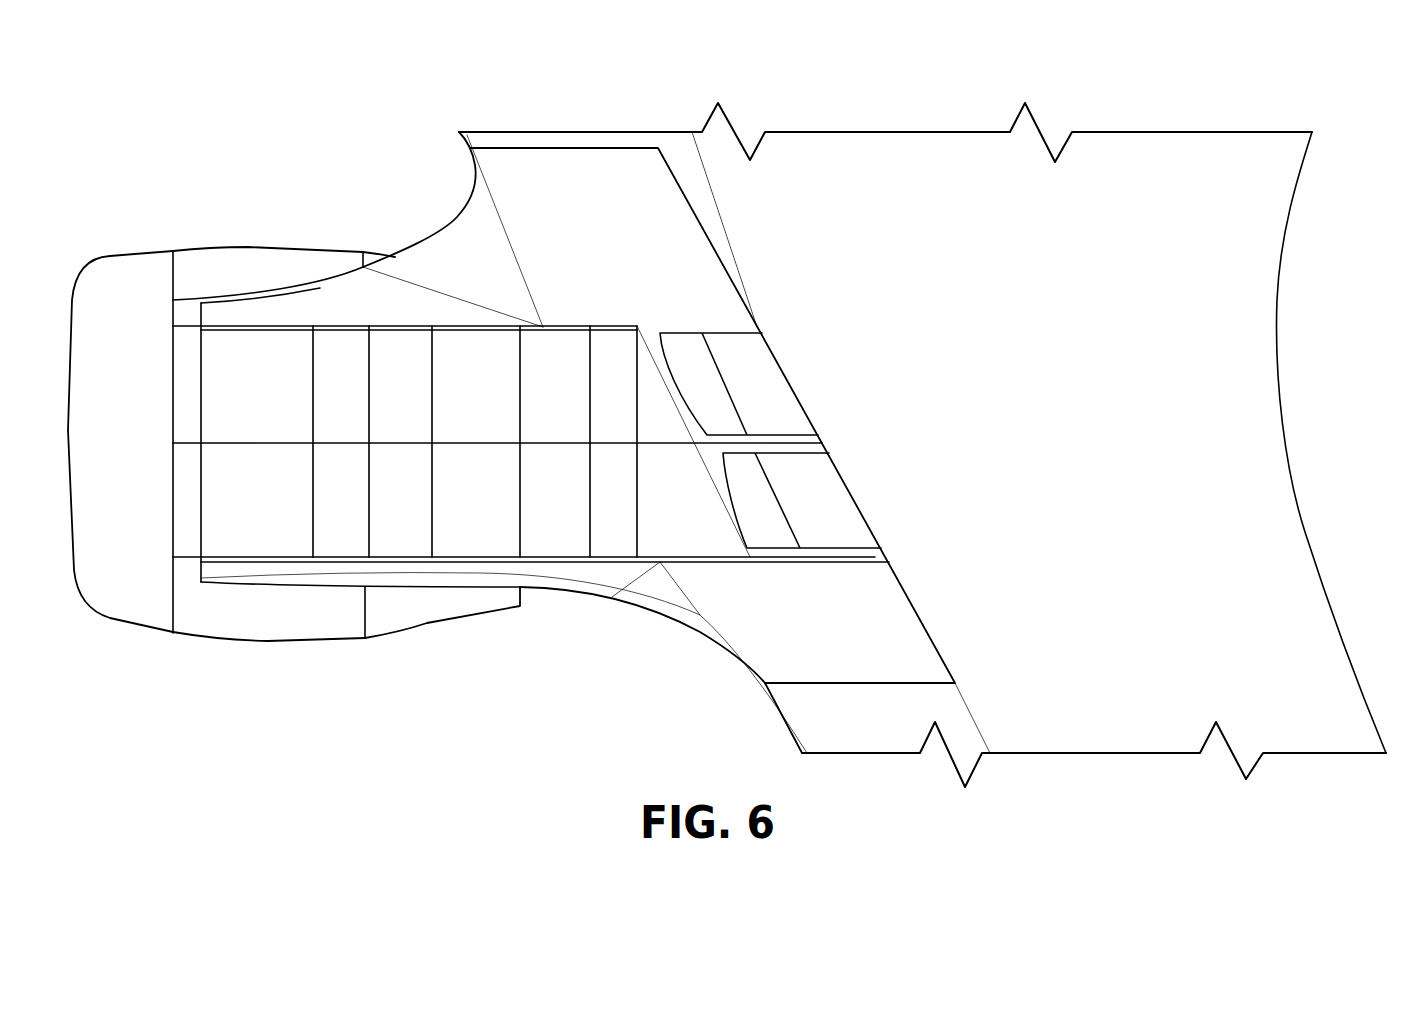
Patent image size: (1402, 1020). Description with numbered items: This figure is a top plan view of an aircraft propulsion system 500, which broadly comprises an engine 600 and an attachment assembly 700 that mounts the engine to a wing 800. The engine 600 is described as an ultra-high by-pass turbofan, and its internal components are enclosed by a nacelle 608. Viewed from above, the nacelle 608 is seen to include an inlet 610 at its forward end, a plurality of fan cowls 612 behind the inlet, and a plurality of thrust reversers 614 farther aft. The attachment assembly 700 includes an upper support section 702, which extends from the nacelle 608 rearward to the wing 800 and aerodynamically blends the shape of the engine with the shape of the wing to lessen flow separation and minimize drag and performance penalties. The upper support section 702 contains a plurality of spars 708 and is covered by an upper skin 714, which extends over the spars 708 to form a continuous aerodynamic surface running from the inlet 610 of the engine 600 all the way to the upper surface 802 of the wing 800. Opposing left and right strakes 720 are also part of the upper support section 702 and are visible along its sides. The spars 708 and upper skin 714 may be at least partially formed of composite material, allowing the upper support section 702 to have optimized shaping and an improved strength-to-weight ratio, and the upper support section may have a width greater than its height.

The aircraft propulsion system 500 is at (250, 95).
The engine 600 is at (200, 190).
The nacelle 608 is at (215, 664).
The inlet 610 is at (78, 341).
The fan cowls 612 is at (248, 250).
The thrust reversers 614 is at (427, 624).
The attachment assembly 700 is at (405, 180).
The upper support section 702 is at (412, 228).
The spars 708 is at (873, 555).
The upper skin 714 is at (555, 395).
The strakes 720 is at (468, 205).
The wing 800 is at (1147, 95).
The upper surface 802 is at (1233, 170).